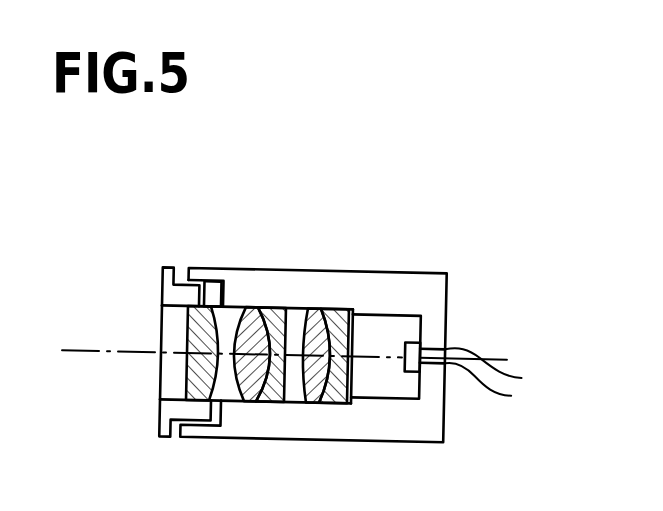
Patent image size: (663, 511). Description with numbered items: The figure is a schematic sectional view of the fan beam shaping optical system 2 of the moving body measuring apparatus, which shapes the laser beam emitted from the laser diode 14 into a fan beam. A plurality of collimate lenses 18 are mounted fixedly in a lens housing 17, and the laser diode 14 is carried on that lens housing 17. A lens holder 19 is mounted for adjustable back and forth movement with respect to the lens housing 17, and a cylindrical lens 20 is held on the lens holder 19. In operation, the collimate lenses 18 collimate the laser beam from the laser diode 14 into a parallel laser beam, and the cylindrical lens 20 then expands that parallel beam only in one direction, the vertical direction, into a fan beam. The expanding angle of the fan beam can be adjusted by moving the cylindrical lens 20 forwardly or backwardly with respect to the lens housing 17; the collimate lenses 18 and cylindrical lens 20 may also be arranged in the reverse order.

The fan beam shaping optical system 2 is at (315, 186).
The laser diode 14 is at (411, 337).
The lens housing 17 is at (404, 285).
The collimate lenses 18 is at (348, 306).
The lens holder 19 is at (157, 271).
The cylindrical lens 20 is at (203, 290).